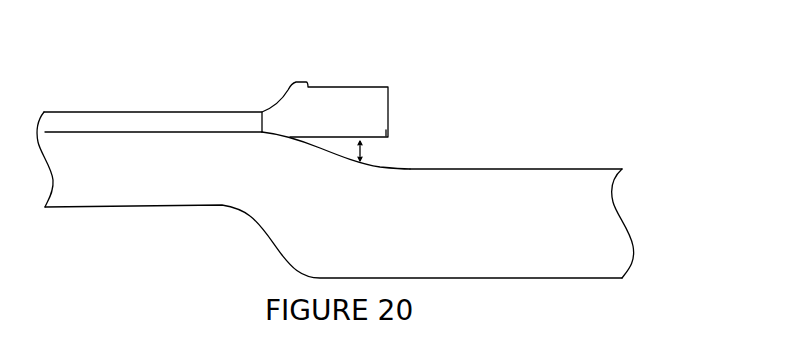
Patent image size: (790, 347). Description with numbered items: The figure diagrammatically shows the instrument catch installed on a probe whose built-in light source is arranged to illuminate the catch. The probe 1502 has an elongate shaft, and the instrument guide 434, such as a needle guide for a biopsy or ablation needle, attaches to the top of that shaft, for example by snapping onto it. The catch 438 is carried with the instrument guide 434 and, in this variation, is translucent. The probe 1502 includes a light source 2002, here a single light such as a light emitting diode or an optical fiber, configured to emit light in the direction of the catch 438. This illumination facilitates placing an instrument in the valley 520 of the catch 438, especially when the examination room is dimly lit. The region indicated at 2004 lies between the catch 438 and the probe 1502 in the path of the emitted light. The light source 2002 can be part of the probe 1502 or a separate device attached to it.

The instrument guide 434 is at (140, 112).
The catch 438 is at (374, 87).
The valley 520 is at (382, 129).
The gap 2004 is at (372, 150).
The light source 2002 is at (362, 160).
The probe 1502 is at (518, 169).